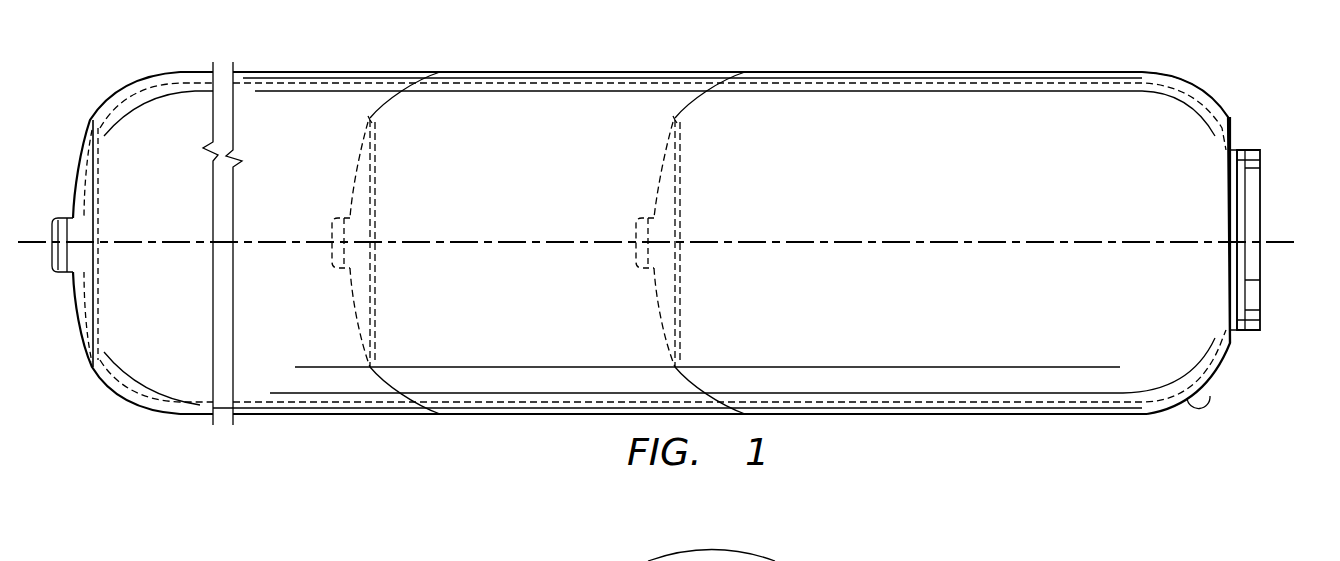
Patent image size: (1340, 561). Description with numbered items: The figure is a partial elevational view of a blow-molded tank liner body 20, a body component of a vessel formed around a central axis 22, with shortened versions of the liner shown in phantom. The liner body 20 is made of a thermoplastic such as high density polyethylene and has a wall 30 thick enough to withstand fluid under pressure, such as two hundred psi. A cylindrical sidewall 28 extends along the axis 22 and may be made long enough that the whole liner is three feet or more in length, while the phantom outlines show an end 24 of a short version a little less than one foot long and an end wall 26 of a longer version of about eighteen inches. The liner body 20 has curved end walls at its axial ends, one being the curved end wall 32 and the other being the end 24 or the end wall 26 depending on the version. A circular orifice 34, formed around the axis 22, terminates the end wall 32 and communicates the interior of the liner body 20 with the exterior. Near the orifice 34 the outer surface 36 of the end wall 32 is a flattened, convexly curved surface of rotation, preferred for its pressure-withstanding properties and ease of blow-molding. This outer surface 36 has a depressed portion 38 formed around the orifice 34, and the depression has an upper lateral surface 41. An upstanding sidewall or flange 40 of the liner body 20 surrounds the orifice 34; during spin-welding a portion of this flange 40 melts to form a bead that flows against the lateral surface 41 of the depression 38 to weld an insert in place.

The tank liner body 20 is at (1110, 416).
The axis 22 is at (905, 240).
The end 24 is at (636, 263).
The end wall 26 is at (332, 263).
The cylindrical sidewall 28 is at (295, 73).
The wall 30 is at (963, 410).
The curved end wall 32 is at (1195, 92).
The orifice 34 is at (1286, 254).
The outer surface 36 is at (1187, 396).
The depressed portion 38 is at (1236, 352).
The flange 40 is at (1263, 288).
The upper lateral surface 41 is at (1239, 336).